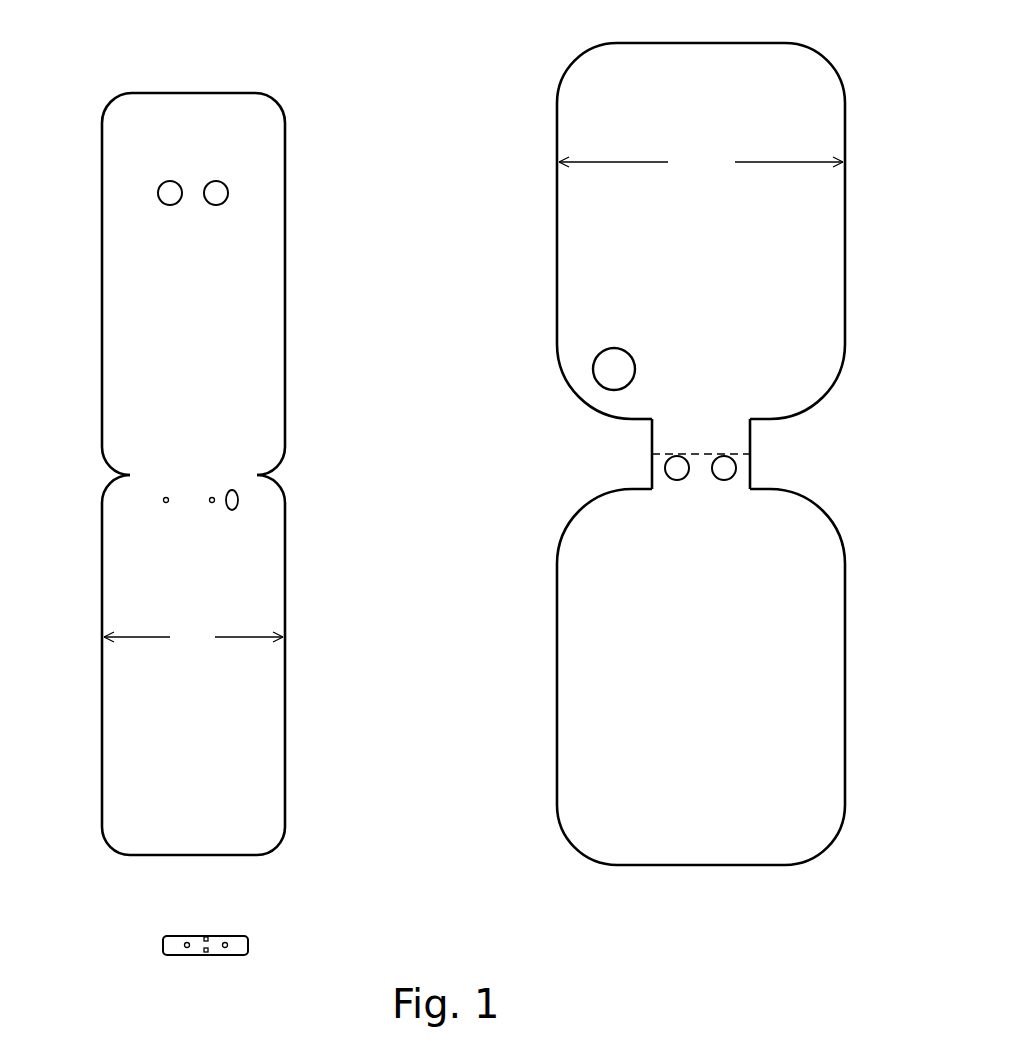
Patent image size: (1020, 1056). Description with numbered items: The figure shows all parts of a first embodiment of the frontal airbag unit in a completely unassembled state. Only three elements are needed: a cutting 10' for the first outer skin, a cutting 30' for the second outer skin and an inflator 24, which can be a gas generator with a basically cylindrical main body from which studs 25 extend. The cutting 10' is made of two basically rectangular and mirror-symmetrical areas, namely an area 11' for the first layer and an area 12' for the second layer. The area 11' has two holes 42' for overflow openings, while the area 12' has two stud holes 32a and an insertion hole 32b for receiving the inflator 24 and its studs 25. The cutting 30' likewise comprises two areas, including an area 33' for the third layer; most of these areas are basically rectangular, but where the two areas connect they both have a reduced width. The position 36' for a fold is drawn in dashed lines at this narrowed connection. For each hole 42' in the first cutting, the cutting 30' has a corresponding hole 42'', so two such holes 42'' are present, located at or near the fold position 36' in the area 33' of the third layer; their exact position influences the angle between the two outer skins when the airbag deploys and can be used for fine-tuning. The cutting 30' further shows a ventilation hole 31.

The cutting for the first outer skin 10' is at (202, 474).
The area for the first layer 11' is at (156, 284).
The area for the second layer 12' is at (154, 665).
The hole for an overflow opening 42' is at (194, 198).
The stud hole 32a is at (166, 500).
The insertion hole 32b is at (238, 500).
The inflator 24 is at (250, 946).
The studs 25 is at (187, 946).
The cutting for the second outer skin 30' is at (703, 454).
The ventilation hole 31 is at (613, 370).
The area for the third layer 33' is at (743, 677).
The position for a fold 36' is at (755, 454).
The hole 42'' is at (688, 475).